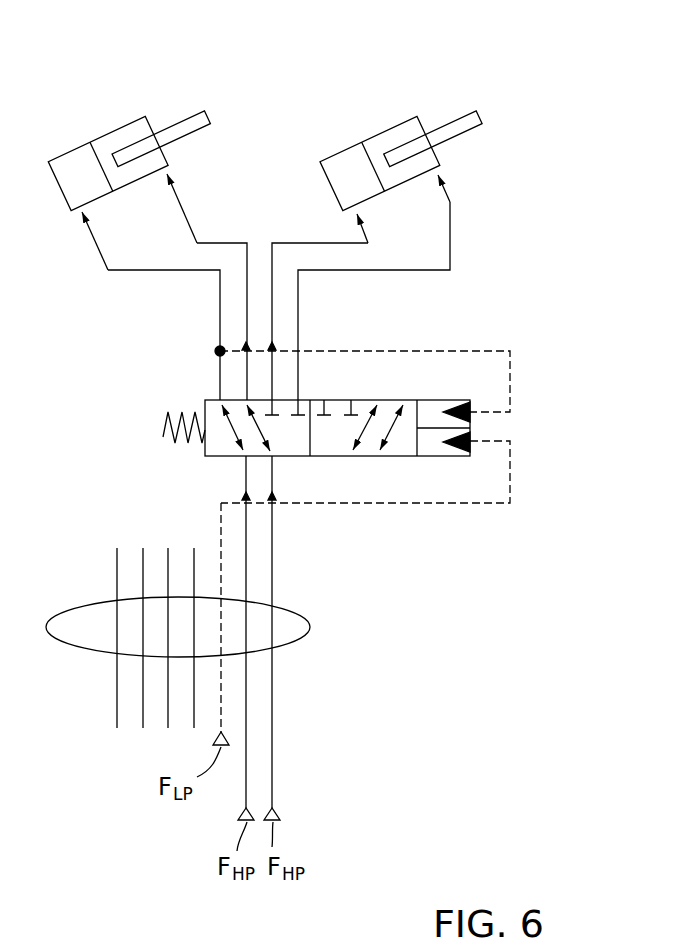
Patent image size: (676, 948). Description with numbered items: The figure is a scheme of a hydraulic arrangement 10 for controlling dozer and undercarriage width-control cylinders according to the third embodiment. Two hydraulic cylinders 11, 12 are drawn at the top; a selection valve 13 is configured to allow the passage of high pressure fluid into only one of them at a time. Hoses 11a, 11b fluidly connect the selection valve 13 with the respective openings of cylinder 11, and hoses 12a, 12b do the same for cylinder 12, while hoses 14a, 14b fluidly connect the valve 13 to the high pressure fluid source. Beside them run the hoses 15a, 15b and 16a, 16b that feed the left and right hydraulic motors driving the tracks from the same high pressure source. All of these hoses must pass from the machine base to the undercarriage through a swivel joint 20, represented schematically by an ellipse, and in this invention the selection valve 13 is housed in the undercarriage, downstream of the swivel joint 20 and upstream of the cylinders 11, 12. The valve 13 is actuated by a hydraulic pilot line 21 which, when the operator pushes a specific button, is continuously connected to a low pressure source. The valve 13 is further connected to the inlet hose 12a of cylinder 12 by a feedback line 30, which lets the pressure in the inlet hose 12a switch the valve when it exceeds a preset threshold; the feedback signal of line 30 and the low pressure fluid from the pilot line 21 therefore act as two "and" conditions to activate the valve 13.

The hydraulic arrangement 10 is at (488, 237).
The cylinder 11 is at (389, 127).
The hydraulic cylinder 12 is at (115, 125).
The hose 11a is at (283, 242).
The hose 11b is at (420, 268).
The inlet hose 12a is at (140, 272).
The hose 12b is at (229, 242).
The selection valve 13 is at (207, 397).
The hose 14a is at (247, 702).
The hose 14b is at (273, 738).
The hose 15a is at (168, 552).
The hose 15b is at (194, 556).
The hose 16a is at (116, 720).
The hose 16b is at (142, 714).
The swivel joint 20 is at (290, 627).
The hydraulic pilot line 21 is at (231, 502).
The feedback line 30 is at (484, 349).